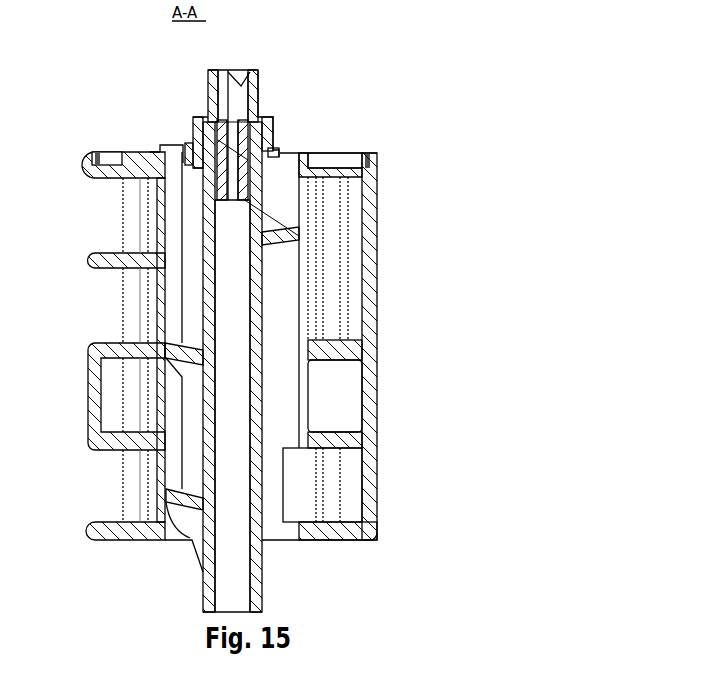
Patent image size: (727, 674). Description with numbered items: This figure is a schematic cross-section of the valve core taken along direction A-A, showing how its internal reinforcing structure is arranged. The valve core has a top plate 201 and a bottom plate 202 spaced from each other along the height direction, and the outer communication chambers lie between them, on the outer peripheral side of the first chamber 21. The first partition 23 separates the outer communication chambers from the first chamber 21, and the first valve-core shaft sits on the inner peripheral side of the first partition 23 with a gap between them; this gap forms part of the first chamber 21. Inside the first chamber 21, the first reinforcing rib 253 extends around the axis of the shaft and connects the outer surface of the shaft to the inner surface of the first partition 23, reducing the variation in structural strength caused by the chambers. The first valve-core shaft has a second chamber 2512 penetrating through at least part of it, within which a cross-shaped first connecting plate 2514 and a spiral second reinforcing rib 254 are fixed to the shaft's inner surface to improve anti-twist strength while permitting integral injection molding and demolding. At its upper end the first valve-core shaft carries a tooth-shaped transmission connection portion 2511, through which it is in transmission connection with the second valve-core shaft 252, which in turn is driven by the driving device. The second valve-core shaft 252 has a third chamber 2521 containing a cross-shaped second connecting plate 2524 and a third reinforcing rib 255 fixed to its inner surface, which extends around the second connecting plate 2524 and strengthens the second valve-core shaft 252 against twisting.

The third reinforcing rib 255 is at (248, 76).
The second valve-core shaft 252 is at (248, 84).
The third chamber 2521 is at (258, 112).
The second connecting plate 2524 is at (222, 96).
The second reinforcing rib 254 is at (244, 144).
The first connecting plate 2514 is at (190, 150).
The transmission connection portion 2511 is at (275, 136).
The first reinforcing rib 253 is at (282, 230).
The second chamber 2512 is at (238, 418).
The top plate 201 is at (373, 176).
The bottom plate 202 is at (318, 534).
The first partition 23 is at (165, 215).
The first chamber 21 is at (190, 292).